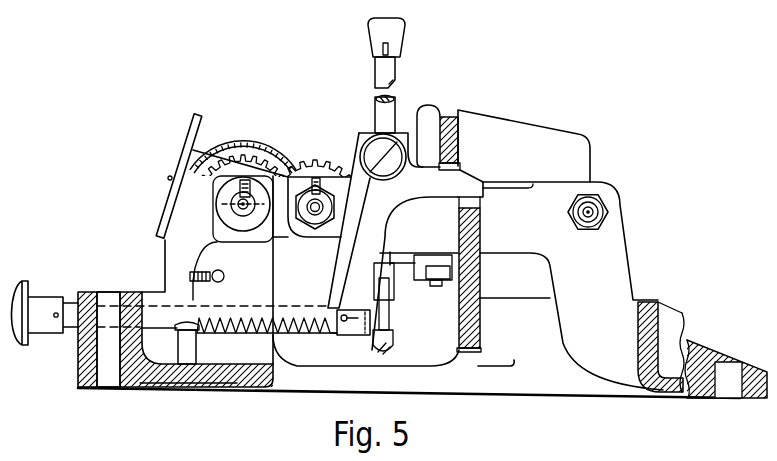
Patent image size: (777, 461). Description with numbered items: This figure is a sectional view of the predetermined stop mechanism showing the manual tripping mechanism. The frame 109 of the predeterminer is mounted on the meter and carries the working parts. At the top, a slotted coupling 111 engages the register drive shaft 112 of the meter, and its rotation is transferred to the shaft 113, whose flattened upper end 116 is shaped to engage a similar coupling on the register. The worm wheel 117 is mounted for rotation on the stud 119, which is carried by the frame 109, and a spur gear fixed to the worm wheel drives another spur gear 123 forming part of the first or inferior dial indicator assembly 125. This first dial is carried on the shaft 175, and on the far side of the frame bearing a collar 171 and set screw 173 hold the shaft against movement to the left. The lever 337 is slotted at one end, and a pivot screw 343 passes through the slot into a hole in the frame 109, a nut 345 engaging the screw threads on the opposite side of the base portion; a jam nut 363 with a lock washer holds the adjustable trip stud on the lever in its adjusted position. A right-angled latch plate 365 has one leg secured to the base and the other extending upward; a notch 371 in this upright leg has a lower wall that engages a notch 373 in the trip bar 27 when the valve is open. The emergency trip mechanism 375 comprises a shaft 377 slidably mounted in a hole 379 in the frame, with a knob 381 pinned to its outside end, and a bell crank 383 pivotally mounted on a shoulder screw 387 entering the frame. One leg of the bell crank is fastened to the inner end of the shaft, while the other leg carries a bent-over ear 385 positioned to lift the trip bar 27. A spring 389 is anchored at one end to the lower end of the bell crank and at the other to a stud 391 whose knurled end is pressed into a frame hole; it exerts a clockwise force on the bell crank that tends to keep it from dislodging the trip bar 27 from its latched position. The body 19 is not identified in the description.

The frame casting 19 is at (629, 258).
The trip bar 27 is at (450, 117).
The frame 109 is at (238, 386).
The slotted coupling 111 is at (394, 312).
The register drive shaft 112 is at (394, 336).
The shaft 113 is at (396, 72).
The upper end 116 is at (403, 30).
The worm wheel 117 is at (317, 163).
The stud 119 is at (332, 208).
The spur gear 123 is at (250, 167).
The first dial indicator assembly 125 is at (245, 136).
The collar 171 is at (228, 197).
The set screw 173 is at (227, 178).
The shaft 175 is at (231, 216).
The lever 337 is at (415, 253).
The pivot screw 343 is at (593, 209).
The nut 345 is at (604, 216).
The jam nut 363 is at (412, 280).
The latch plate 365 is at (538, 131).
The notch 371 is at (456, 135).
The notch 373 is at (458, 164).
The emergency trip mechanism 375 is at (76, 292).
The shaft 377 is at (182, 307).
The hole 379 is at (82, 337).
The knob 381 is at (13, 287).
The bell crank 383 is at (353, 243).
The bent-over ear 385 is at (451, 170).
The shoulder screw 387 is at (370, 173).
The spring 389 is at (318, 302).
The stud 391 is at (196, 354).